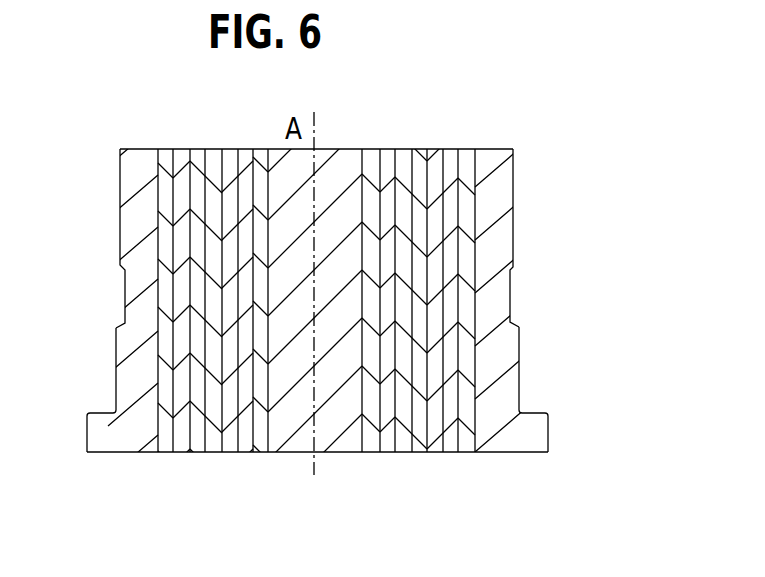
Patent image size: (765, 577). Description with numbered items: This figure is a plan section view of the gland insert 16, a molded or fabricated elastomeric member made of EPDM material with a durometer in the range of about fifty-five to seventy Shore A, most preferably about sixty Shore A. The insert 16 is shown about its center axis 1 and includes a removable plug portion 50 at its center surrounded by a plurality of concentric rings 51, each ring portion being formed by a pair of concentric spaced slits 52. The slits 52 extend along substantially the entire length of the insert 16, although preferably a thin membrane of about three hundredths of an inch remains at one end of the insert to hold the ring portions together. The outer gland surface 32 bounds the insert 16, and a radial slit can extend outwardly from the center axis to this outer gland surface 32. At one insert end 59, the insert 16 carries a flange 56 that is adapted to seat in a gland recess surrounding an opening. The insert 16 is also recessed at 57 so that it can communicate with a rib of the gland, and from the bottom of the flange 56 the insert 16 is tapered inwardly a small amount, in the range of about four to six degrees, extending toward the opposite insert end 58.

The seal assembly axis 1 is at (320, 293).
The insert 16 is at (420, 453).
The outer gland surface 32 is at (513, 262).
The removable plug portion 50 is at (291, 440).
The concentric rings 51 is at (260, 151).
The concentric spaced slits 52 is at (193, 212).
The flange 56 is at (97, 412).
The recess 57 is at (125, 280).
The insert end 58 is at (490, 150).
The insert end 59 is at (467, 453).